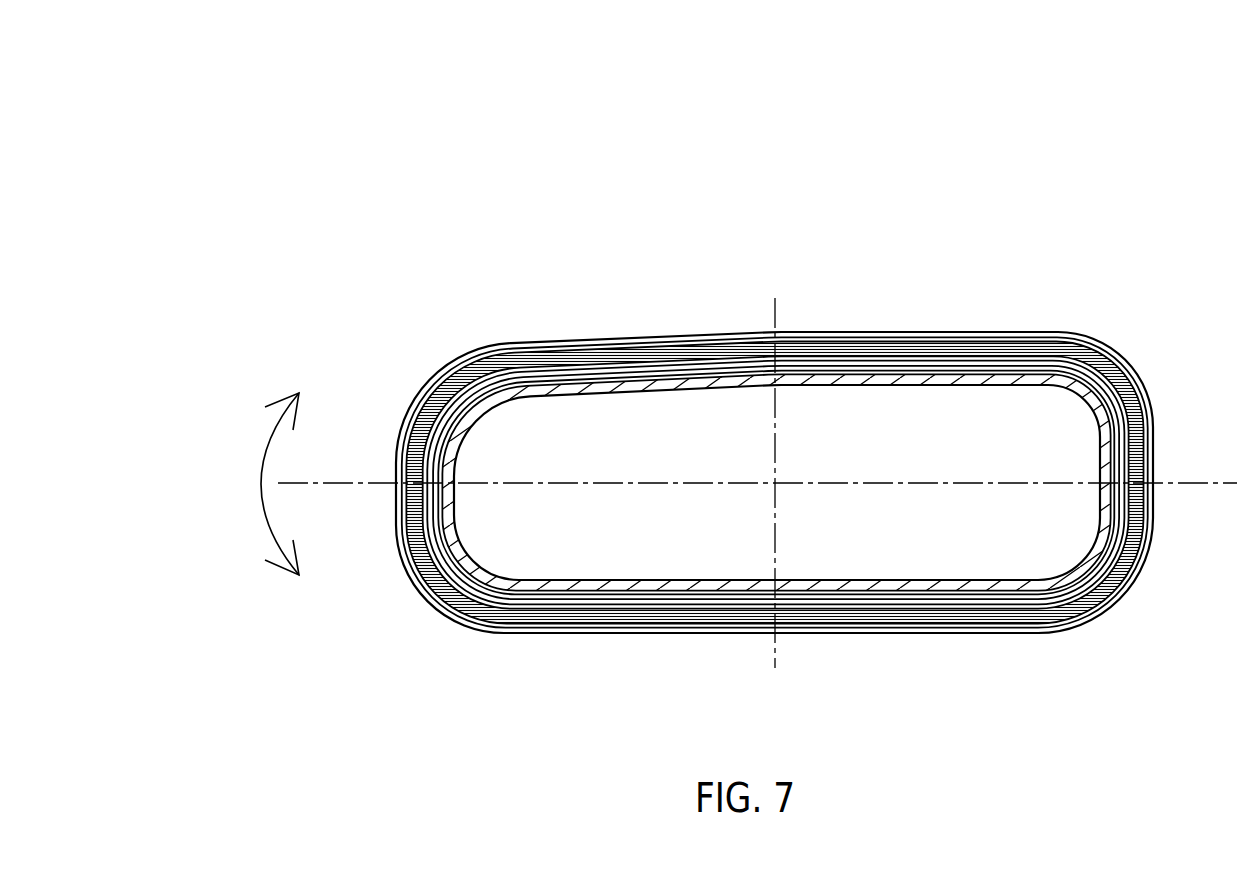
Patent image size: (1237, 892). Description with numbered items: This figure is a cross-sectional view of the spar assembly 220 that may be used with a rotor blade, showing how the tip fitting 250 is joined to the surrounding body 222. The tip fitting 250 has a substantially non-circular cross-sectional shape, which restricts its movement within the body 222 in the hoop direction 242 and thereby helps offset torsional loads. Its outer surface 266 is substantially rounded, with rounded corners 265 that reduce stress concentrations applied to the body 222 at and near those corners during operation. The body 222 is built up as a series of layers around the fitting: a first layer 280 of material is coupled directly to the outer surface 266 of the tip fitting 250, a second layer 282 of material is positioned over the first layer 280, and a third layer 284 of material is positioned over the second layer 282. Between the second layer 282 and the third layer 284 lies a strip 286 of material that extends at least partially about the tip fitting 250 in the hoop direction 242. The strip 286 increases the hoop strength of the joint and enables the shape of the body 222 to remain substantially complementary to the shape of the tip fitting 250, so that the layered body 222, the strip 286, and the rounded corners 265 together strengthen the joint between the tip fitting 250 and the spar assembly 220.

The spar assembly 220 is at (437, 123).
The body 222 is at (628, 325).
The hoop direction 242 is at (252, 478).
The tip fitting 250 is at (559, 396).
The rounded corners 265 is at (1105, 378).
The outer surface 266 is at (526, 402).
The first layer 280 is at (487, 402).
The second layer 282 is at (450, 413).
The third layer 284 is at (412, 414).
The strip 286 is at (432, 402).